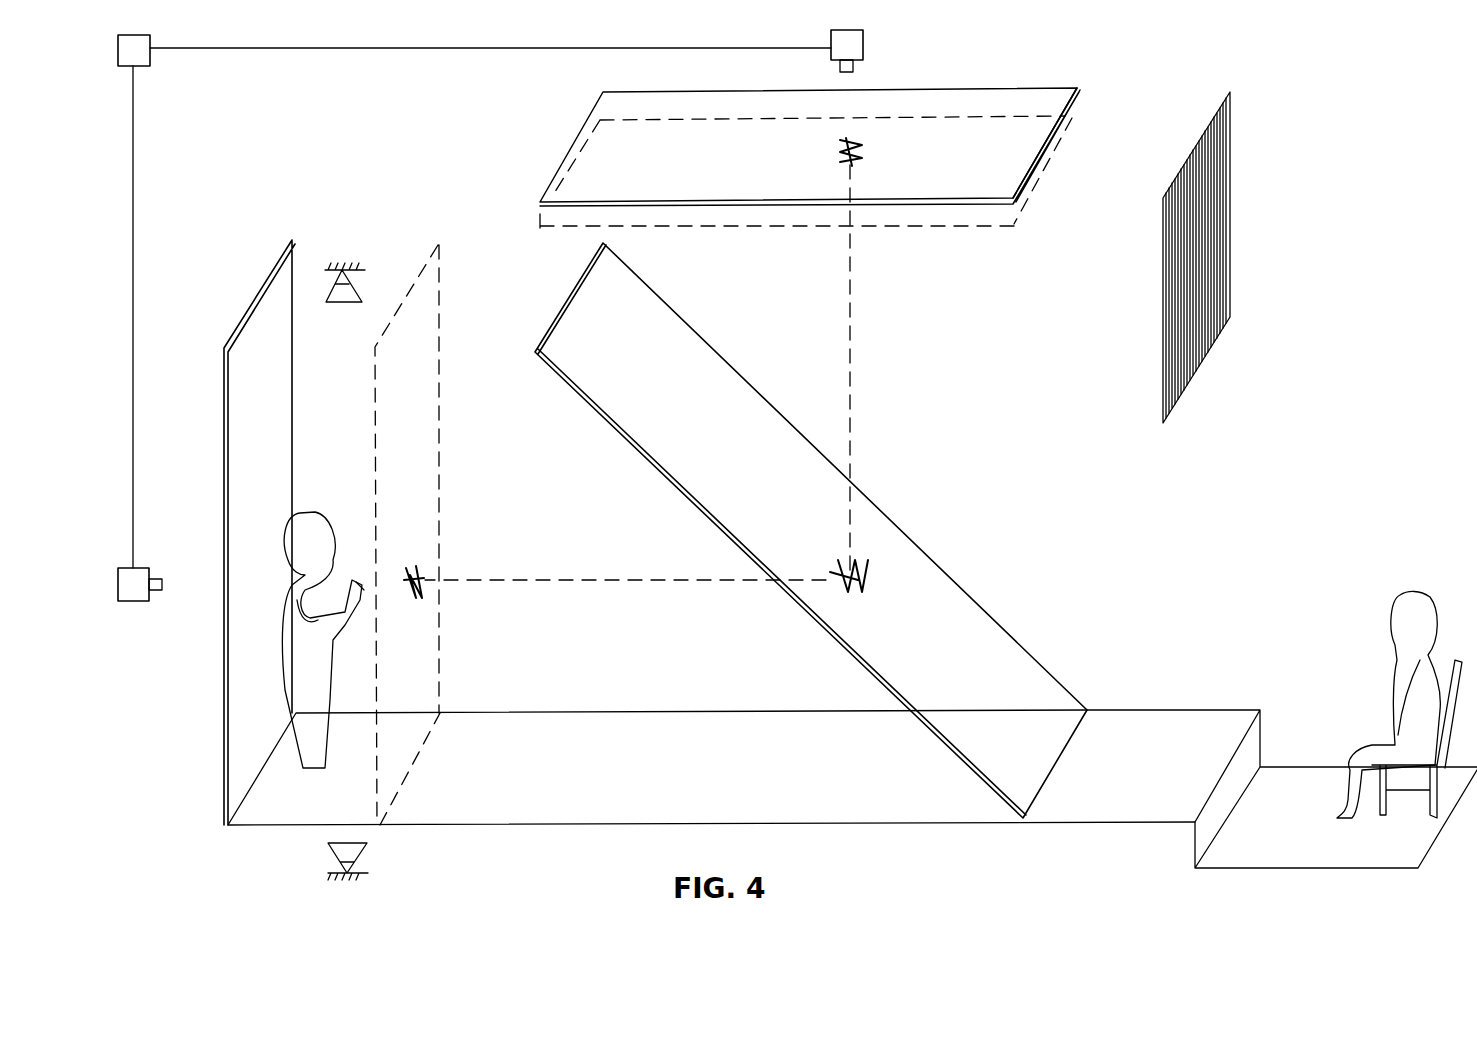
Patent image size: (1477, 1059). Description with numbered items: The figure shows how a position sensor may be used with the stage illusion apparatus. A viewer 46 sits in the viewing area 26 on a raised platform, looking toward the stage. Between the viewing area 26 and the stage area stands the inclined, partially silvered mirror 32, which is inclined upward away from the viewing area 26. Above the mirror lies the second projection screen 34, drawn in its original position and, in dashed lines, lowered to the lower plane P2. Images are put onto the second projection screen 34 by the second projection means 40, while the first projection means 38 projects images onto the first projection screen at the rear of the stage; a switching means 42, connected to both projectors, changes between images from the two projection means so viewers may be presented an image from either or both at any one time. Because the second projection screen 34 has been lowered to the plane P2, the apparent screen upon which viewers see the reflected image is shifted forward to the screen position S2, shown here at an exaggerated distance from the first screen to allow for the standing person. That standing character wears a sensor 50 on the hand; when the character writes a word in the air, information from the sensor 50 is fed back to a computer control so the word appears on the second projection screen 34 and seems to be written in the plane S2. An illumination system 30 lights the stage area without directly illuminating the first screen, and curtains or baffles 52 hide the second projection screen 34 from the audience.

The viewing area 26 is at (1308, 845).
The illumination system 30 is at (350, 290).
The partially silvered mirror 32 is at (948, 583).
The second projection screen 34 is at (960, 185).
The first projection means 38 is at (145, 567).
The second projection means 40 is at (855, 47).
The switching means 42 is at (140, 60).
The viewer 46 is at (1393, 620).
The position/orientation sensor 50 is at (328, 640).
The curtains or baffles 52 is at (1183, 290).
The screen position S2 is at (441, 308).
The lower plane P2 is at (1020, 198).